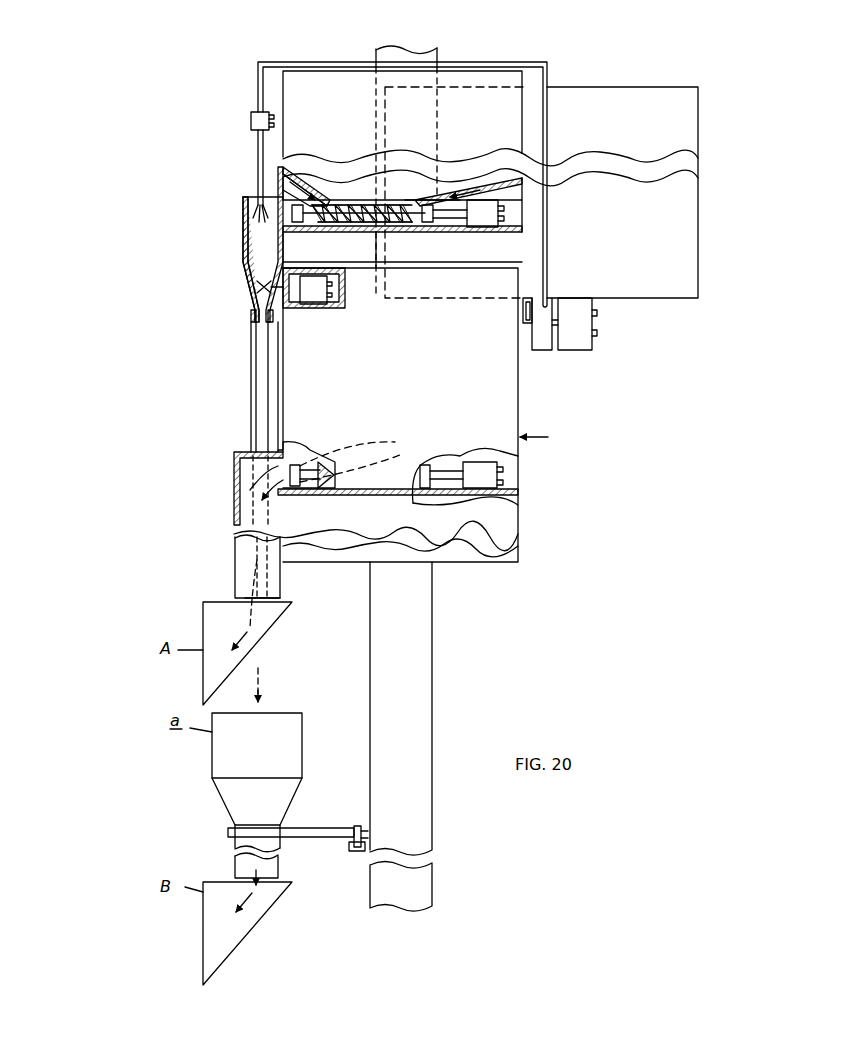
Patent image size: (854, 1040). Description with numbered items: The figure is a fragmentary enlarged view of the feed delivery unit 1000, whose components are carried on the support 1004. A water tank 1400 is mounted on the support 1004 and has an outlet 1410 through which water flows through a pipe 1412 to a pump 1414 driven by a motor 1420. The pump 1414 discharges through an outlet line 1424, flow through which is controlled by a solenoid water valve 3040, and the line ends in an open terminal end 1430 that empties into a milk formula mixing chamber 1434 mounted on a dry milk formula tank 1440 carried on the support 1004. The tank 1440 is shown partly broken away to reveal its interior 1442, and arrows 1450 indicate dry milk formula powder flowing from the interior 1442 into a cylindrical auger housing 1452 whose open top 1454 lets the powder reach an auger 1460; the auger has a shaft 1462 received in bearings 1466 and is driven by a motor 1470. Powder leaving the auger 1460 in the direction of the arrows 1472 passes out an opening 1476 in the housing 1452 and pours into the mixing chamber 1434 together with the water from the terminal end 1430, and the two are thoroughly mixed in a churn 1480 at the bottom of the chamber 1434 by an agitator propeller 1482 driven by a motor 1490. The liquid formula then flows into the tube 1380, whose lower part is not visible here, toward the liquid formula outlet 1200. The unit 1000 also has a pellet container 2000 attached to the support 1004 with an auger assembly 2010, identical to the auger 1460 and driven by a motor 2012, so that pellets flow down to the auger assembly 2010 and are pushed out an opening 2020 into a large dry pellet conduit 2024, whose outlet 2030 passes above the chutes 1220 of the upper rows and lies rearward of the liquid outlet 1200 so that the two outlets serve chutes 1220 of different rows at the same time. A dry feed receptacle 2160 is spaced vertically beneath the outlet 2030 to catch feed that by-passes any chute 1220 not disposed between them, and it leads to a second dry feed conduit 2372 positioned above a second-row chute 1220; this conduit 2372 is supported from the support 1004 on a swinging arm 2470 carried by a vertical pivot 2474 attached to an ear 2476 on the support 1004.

The feed delivery unit 1000 is at (556, 435).
The support 1004 is at (455, 70).
The liquid formula outlet 1200 is at (282, 598).
The chute 1220 is at (208, 620).
The tube 1380 is at (251, 377).
The water tank 1400 is at (634, 183).
The outlet 1410 is at (528, 298).
The pipe 1412 is at (526, 314).
The pump 1414 is at (540, 345).
The motor 1420 is at (586, 340).
The outlet line 1424 is at (258, 73).
The open terminal end 1430 is at (243, 216).
The milk formula mixing chamber 1434 is at (248, 234).
The dry milk formula tank 1440 is at (260, 200).
The interior 1442 is at (398, 190).
The arrows 1450 is at (357, 195).
The cylindrical auger housing 1452 is at (340, 195).
The open top 1454 is at (410, 201).
The auger 1460 is at (340, 196).
The shaft 1462 is at (452, 222).
The bearings 1466 is at (283, 248).
The motor 1470 is at (488, 222).
The arrows 1472 is at (283, 202).
The opening 1476 is at (283, 184).
The churn 1480 is at (256, 286).
The agitator propeller 1482 is at (290, 312).
The motor 1490 is at (322, 305).
The pellet container 2000 is at (518, 397).
The auger assembly 2010 is at (323, 462).
The motor 2012 is at (470, 488).
The opening 2020 is at (290, 496).
The dry pellet conduit 2024 is at (234, 505).
The outlet 2030 is at (255, 597).
The dry feed receptacle 2160 is at (228, 766).
The second dry feed conduit 2372 is at (238, 865).
The swinging arm 2470 is at (290, 828).
The pivot 2474 is at (360, 828).
The ear 2476 is at (366, 846).
The solenoid water valve 3040 is at (251, 120).